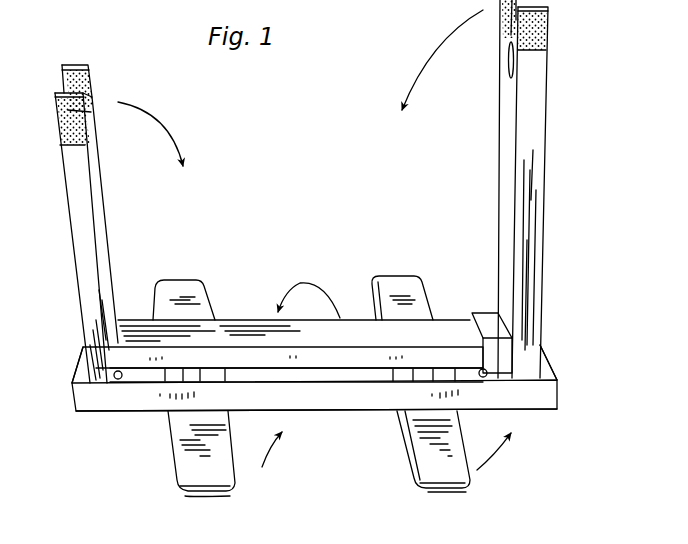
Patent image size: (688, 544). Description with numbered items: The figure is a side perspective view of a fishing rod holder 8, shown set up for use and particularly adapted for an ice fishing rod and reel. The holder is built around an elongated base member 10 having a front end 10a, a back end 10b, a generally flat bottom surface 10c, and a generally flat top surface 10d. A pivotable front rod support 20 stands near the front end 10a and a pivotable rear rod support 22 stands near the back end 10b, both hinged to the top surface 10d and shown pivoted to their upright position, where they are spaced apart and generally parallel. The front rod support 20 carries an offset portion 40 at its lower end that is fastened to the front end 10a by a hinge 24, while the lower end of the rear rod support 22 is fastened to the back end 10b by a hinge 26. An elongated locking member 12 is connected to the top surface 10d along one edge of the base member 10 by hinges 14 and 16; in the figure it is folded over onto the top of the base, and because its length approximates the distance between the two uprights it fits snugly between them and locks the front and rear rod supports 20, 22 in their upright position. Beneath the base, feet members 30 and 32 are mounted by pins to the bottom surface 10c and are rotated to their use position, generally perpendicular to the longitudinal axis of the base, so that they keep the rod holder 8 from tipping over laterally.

The fishing rod holder 8 is at (624, 120).
The elongated base member 10 is at (540, 393).
The front end 10a is at (542, 372).
The back end 10b is at (86, 390).
The bottom surface 10c is at (160, 415).
The top surface 10d is at (363, 375).
The locking member 12 is at (345, 357).
The hinge 14 is at (433, 370).
The hinge 16 is at (222, 335).
The front rod support 20 is at (518, 118).
The rear rod support 22 is at (85, 203).
The hinge 24 is at (483, 377).
The hinge 26 is at (120, 382).
The feet member 30 is at (420, 458).
The feet member 32 is at (205, 468).
The offset portion 40 is at (498, 352).